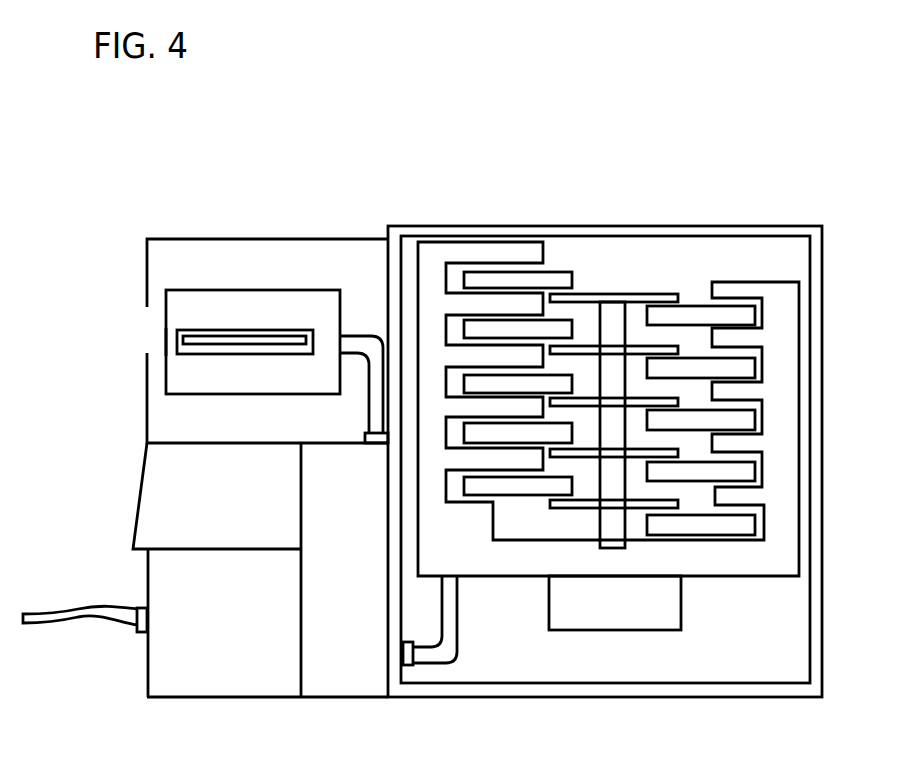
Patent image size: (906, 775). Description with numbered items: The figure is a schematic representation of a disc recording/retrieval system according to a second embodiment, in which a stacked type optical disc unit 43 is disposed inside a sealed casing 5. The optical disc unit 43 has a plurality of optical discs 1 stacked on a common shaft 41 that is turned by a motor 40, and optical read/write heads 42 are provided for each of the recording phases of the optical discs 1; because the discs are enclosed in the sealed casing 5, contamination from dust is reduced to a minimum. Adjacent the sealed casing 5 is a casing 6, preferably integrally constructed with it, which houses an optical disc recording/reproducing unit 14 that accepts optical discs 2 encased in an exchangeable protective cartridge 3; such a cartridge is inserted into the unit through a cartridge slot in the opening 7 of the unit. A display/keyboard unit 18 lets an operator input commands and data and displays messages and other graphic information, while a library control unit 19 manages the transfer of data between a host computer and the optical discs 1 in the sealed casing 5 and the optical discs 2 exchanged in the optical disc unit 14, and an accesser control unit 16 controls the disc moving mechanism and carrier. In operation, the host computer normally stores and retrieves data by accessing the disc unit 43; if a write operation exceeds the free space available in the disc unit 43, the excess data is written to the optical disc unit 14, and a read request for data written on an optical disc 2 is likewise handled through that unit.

The optical disc 1 is at (652, 292).
The optical disc 2 is at (245, 336).
The cartridge 3 is at (215, 330).
The sealed casing 5 is at (826, 352).
The casing 6 is at (180, 239).
The opening 7 is at (165, 344).
The optical disc recording/reproducing unit 14 is at (303, 290).
The accesser control unit 16 is at (348, 660).
The display/keyboard unit 18 is at (148, 507).
The library control unit 19 is at (188, 655).
The motor 40 is at (604, 618).
The common shaft 41 is at (617, 317).
The optical read/write heads 42 is at (552, 278).
The stacked type optical disc unit 43 is at (745, 645).